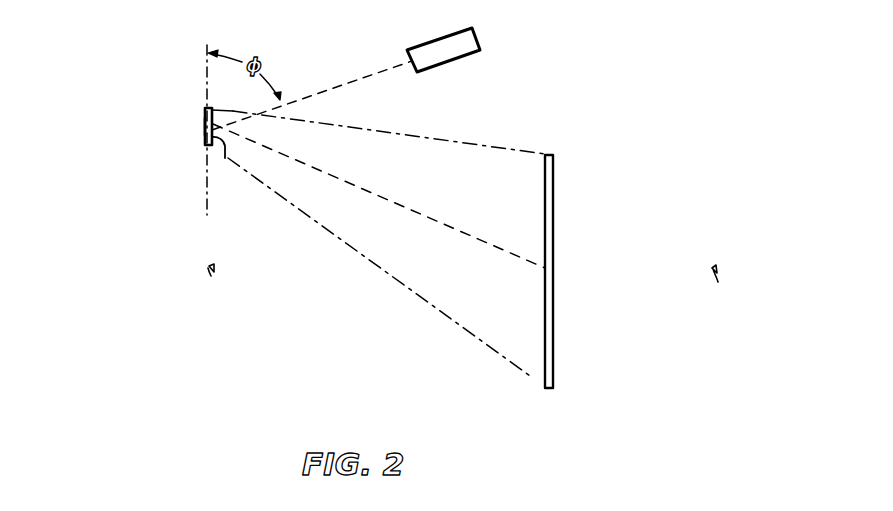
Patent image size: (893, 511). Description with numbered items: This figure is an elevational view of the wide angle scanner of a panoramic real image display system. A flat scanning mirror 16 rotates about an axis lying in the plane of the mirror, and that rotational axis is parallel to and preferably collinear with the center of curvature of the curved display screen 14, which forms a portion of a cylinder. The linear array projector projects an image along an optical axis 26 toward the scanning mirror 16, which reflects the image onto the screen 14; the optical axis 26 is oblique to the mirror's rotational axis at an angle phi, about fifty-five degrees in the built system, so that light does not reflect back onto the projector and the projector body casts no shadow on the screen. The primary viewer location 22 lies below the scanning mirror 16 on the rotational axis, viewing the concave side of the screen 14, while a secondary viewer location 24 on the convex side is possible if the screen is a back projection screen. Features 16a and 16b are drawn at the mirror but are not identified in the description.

The curved display screen 14 is at (547, 212).
The scanning mirror 16 is at (203, 107).
The lens 16a is at (225, 158).
The mirror reflective surface 16b is at (206, 123).
The primary viewer location 22 is at (208, 274).
The secondary viewer location 24 is at (718, 282).
The optical axis 26 is at (370, 76).